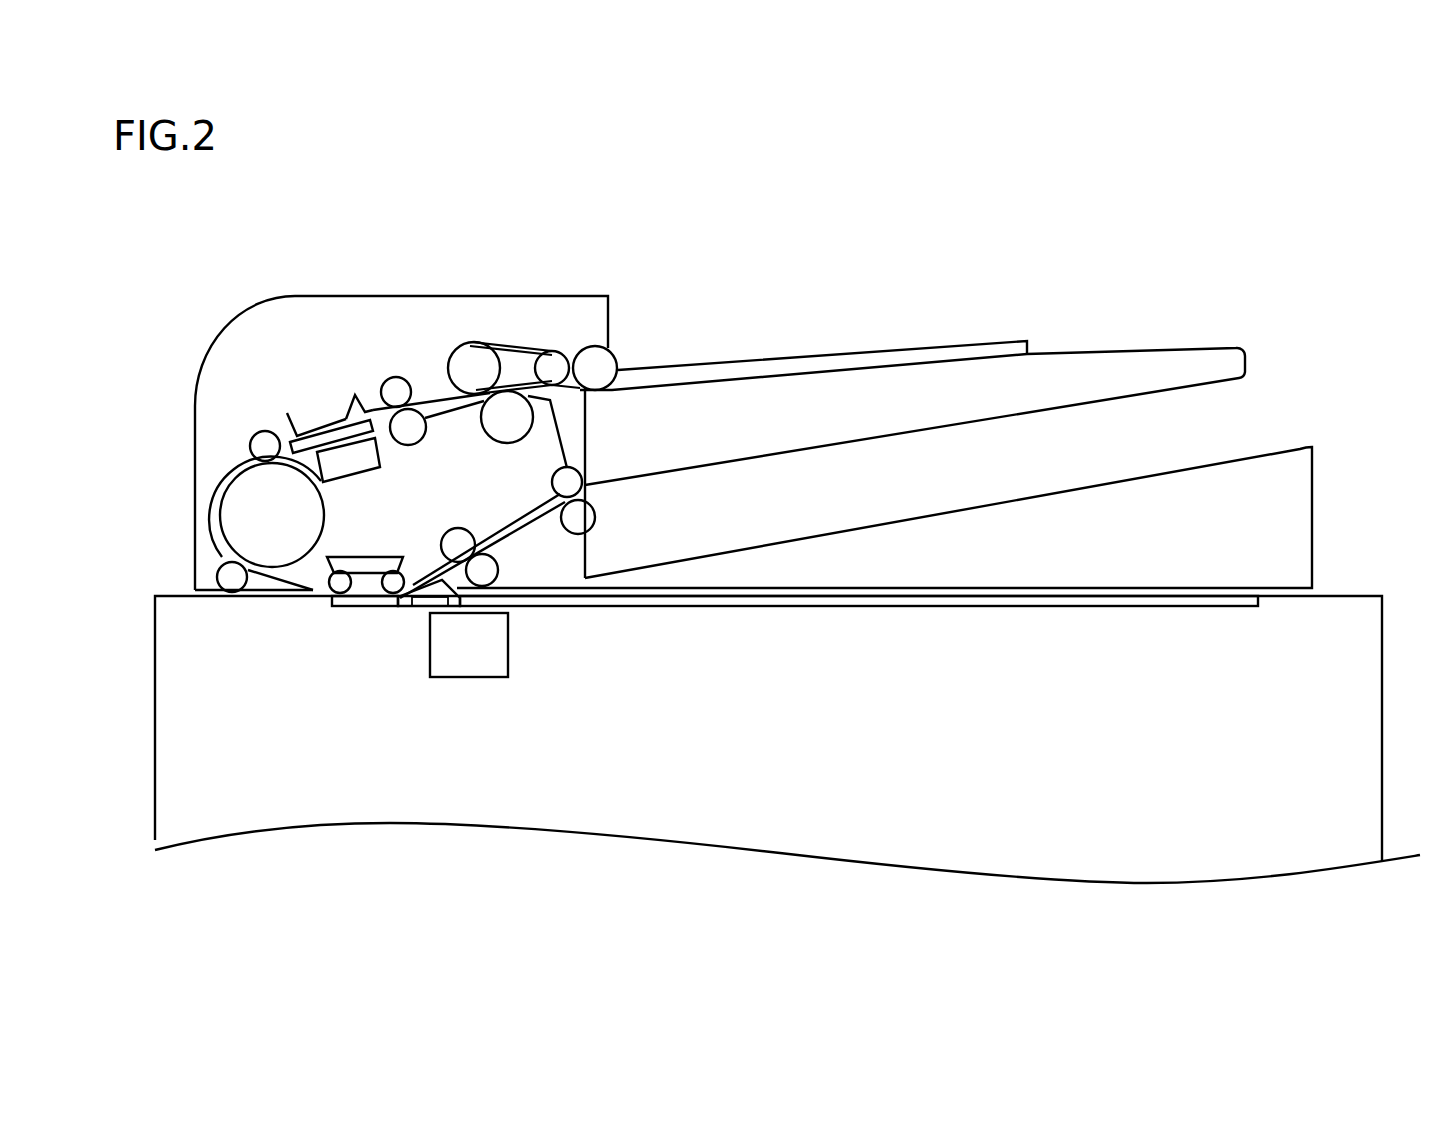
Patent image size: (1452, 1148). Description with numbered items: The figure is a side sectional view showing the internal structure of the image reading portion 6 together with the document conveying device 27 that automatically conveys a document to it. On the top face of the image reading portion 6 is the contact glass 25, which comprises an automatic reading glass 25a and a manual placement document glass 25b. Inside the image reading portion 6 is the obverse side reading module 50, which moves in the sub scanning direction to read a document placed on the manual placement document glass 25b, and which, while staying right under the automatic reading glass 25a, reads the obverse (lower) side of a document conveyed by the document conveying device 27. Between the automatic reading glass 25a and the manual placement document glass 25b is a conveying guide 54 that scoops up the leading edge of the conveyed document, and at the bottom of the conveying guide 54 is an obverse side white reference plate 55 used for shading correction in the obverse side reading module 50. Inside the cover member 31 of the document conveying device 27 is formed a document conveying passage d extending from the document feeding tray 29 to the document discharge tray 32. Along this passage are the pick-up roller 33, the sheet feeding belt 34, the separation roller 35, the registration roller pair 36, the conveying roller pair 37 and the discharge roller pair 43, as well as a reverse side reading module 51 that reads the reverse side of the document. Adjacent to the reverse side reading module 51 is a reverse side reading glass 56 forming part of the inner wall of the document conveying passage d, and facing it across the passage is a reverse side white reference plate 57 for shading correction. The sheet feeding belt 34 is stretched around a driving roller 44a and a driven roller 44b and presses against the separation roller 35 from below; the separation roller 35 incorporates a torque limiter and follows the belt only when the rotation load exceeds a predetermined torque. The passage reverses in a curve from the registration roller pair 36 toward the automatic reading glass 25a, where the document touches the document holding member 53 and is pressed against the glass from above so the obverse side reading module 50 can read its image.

The document conveying device 27 is at (822, 290).
The cover member 31 is at (275, 315).
The document conveying passage d is at (233, 473).
The reverse side reading glass 56 is at (277, 437).
The reverse side white reference plate 57 is at (328, 418).
The reverse side reading module 51 is at (365, 462).
The registration roller pair 36 is at (398, 385).
The driving roller 44a is at (472, 358).
The driven roller 44b is at (553, 363).
The sheet feeding belt 34 is at (510, 343).
The pick-up roller 33 is at (612, 360).
The separation roller 35 is at (507, 425).
The discharge roller pair 43 is at (592, 520).
The conveying guide 54 is at (418, 572).
The conveying roller pair 37 is at (500, 575).
The document holding member 53 is at (368, 560).
The obverse side white reference plate 55 is at (422, 607).
The contact glass 25 is at (761, 643).
The automatic reading glass 25a is at (356, 608).
The manual placement document glass 25b is at (840, 607).
The obverse side reading module 50 is at (465, 680).
The document feeding tray 29 is at (1160, 350).
The document discharge tray 32 is at (1000, 500).
The image reading portion 6 is at (1385, 670).